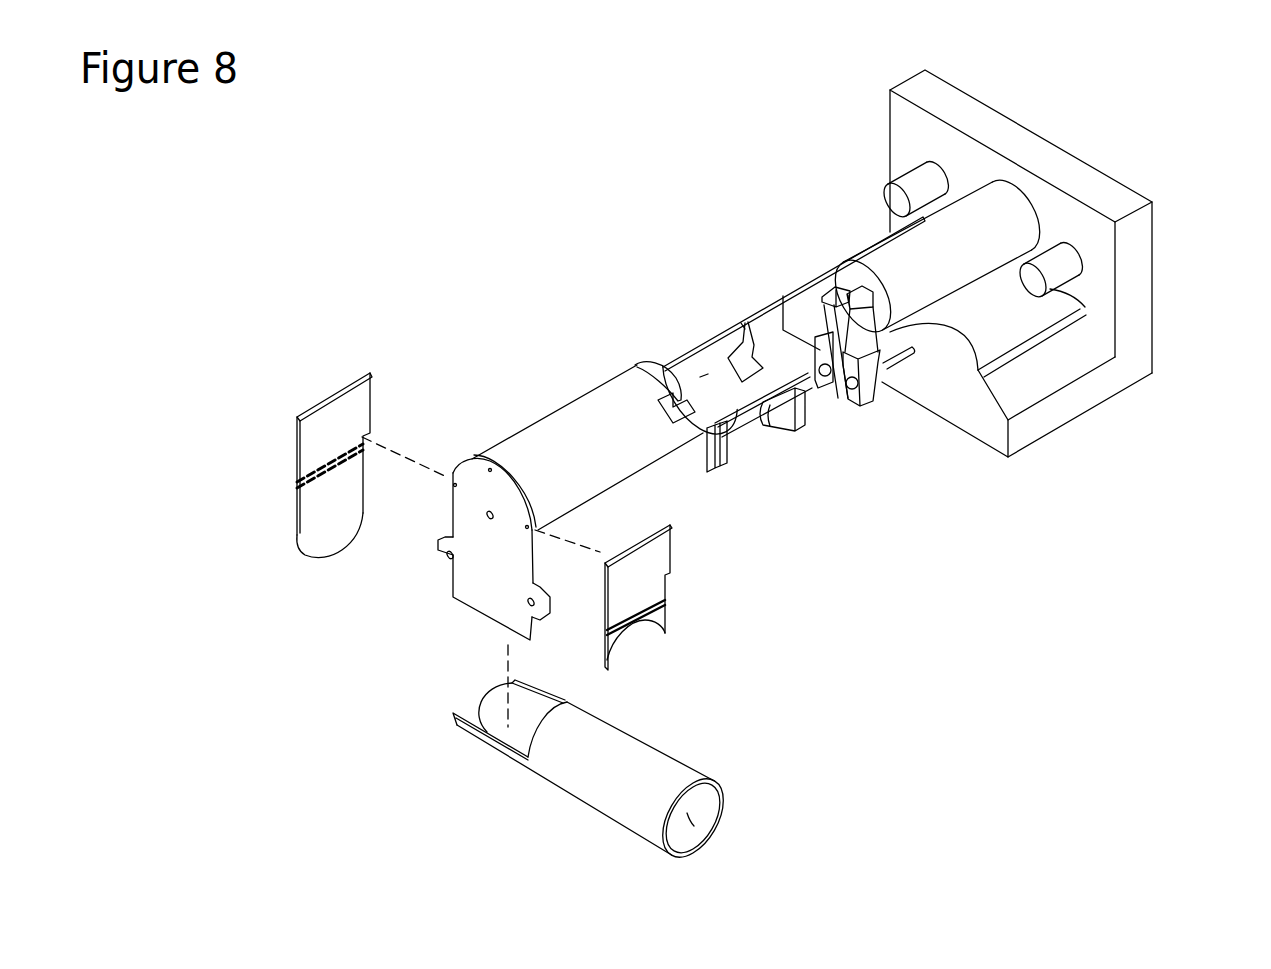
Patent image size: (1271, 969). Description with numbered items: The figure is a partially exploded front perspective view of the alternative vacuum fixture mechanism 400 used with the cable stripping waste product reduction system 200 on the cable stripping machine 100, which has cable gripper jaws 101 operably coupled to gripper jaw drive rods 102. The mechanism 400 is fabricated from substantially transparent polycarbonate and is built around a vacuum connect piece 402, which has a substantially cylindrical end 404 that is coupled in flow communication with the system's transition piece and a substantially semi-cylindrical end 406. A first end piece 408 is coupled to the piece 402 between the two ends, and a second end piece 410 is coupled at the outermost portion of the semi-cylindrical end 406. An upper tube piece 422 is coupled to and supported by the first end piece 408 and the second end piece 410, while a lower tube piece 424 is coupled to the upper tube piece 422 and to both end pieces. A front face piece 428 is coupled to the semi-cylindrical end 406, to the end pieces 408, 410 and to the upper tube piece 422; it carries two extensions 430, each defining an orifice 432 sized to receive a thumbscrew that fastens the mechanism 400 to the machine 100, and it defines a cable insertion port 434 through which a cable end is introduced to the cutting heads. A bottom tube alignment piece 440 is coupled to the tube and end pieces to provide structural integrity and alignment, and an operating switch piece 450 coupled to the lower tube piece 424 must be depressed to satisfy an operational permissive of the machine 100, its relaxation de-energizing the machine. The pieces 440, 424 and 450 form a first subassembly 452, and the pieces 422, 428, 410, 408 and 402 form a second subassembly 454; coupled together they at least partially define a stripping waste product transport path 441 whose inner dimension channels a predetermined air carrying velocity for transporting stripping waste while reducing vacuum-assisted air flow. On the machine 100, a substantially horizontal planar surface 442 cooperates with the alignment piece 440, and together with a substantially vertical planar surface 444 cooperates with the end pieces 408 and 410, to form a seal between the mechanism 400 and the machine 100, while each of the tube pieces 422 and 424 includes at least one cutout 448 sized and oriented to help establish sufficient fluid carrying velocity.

The cable stripping machine 100 is at (1133, 245).
The cable gripper jaws 101 is at (868, 395).
The gripper jaw drive rods 102 is at (822, 388).
The cable stripping waste product reduction system 200 is at (534, 806).
The vacuum fixture mechanism 400 is at (583, 245).
The vacuum connect piece 402 is at (675, 773).
The substantially cylindrical end 404 is at (637, 852).
The substantially semi-cylindrical end 406 is at (444, 767).
The first end piece 408 is at (657, 587).
The second end piece 410 is at (323, 487).
The upper tube piece 422 is at (590, 410).
The lower tube piece 424 is at (682, 352).
The front face piece 428 is at (482, 583).
The extensions 430 is at (438, 551).
The orifice 432 is at (445, 560).
The cable insertion port 434 is at (487, 515).
The bottom tube alignment piece 440 is at (723, 473).
The stripping waste product transport path 441 is at (700, 377).
The substantially horizontal planar surface 442 is at (1021, 333).
The substantially vertical planar surface 444 is at (969, 398).
The cutout 448 is at (638, 364).
The operating switch piece 450 is at (792, 418).
The first subassembly 452 is at (713, 246).
The second subassembly 454 is at (449, 421).